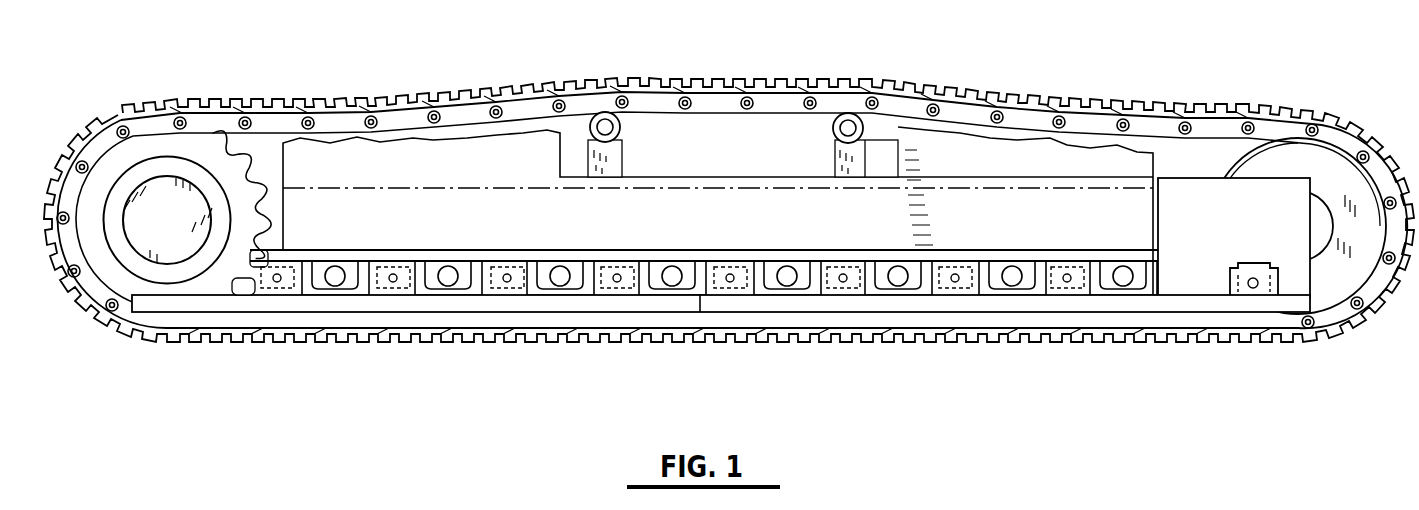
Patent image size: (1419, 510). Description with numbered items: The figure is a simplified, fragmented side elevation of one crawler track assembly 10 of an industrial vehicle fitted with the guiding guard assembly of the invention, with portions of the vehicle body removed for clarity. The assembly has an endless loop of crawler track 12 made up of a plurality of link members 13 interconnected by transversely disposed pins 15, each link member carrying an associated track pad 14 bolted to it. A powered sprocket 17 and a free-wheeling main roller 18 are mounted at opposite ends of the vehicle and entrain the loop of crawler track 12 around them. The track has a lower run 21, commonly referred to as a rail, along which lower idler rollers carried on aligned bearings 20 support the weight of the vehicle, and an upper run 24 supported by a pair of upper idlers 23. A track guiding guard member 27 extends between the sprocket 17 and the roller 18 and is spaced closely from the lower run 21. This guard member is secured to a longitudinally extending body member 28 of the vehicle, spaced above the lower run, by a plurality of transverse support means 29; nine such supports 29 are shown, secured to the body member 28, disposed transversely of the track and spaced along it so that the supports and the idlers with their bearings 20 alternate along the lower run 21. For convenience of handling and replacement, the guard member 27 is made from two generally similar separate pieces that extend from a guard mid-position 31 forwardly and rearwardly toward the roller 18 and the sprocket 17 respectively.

The crawler track assembly 10 is at (360, 80).
The crawler track 12 is at (258, 84).
The link members 13 is at (533, 107).
The track pad 14 is at (748, 78).
The pins 15 is at (433, 118).
The powered sprocket 17 is at (235, 187).
The main roller 18 is at (1318, 172).
The bearings 20 is at (450, 270).
The lower run 21 is at (498, 355).
The upper idlers 23 is at (607, 125).
The upper run 24 is at (797, 72).
The track guiding guard member 27 is at (265, 305).
The body member 28 is at (355, 250).
The transverse support means 29 is at (283, 267).
The guard mid-position 31 is at (727, 297).